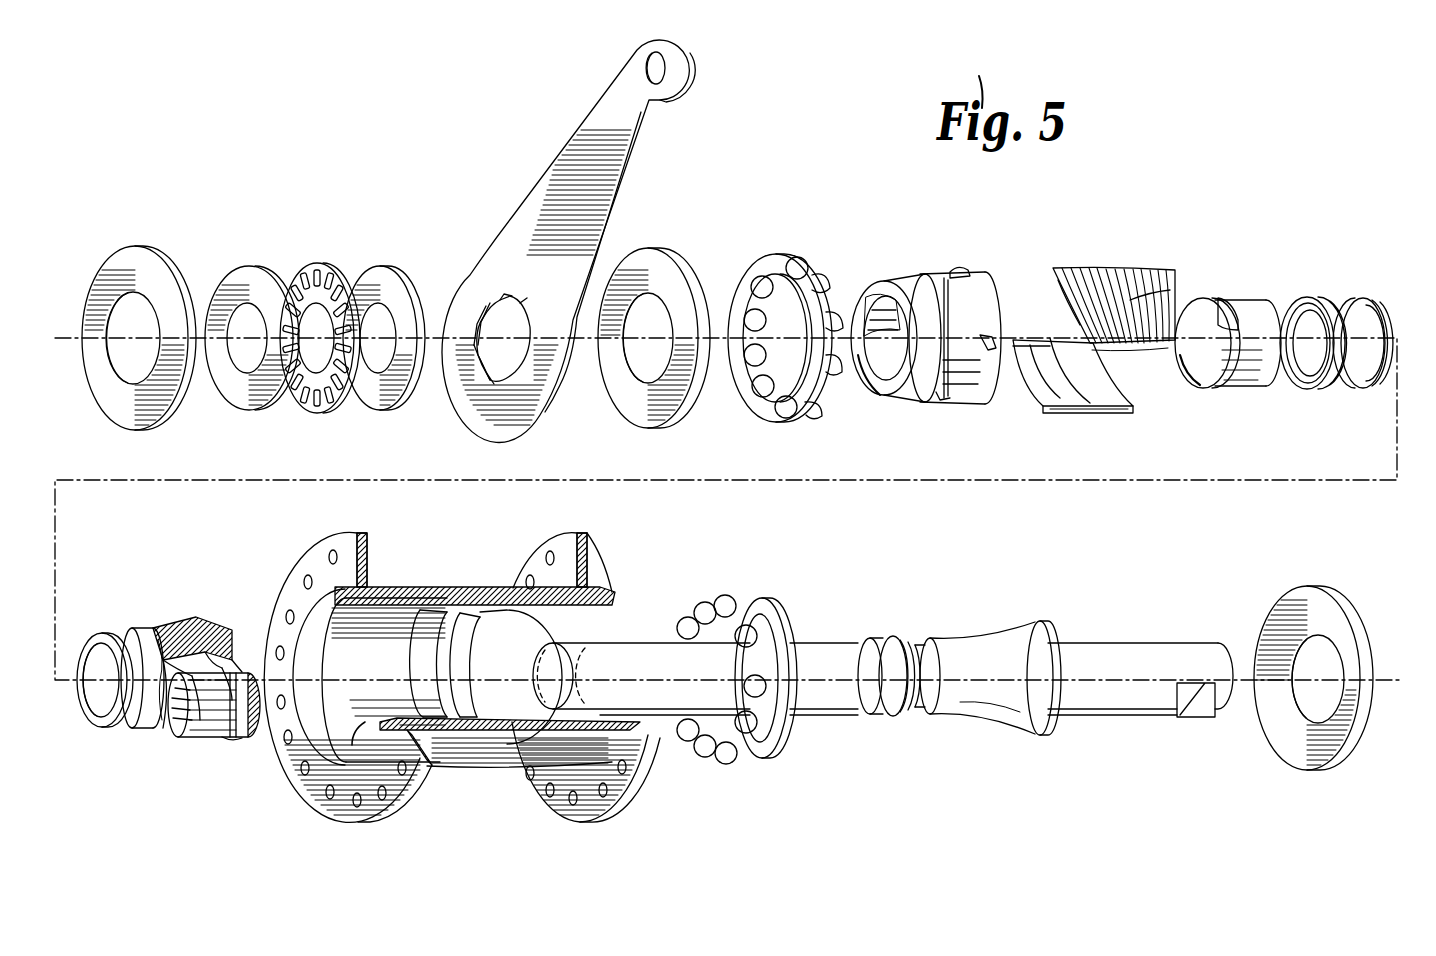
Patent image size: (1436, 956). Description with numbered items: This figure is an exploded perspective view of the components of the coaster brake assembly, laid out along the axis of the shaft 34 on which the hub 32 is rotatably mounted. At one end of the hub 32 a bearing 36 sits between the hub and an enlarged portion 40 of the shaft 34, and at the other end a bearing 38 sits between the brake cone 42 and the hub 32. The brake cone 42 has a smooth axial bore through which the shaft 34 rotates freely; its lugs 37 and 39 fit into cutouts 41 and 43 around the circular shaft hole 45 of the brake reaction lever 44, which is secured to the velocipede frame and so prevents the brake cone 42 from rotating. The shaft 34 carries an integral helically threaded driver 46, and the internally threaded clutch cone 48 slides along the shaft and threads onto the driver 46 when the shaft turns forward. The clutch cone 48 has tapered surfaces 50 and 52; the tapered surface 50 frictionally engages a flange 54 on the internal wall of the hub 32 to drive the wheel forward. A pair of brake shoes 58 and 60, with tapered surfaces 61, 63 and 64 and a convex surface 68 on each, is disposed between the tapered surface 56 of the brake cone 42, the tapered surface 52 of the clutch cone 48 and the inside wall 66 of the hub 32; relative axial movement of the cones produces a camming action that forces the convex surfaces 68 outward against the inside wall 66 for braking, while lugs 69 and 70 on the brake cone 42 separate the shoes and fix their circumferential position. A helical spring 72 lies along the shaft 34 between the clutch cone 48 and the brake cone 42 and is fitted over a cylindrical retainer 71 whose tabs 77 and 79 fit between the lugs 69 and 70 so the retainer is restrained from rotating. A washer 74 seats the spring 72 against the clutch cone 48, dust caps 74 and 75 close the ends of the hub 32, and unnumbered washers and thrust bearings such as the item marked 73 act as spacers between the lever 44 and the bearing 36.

The hub 32 is at (437, 587).
The shaft 34 is at (1131, 695).
The bearing 36 is at (770, 620).
The lug 37 is at (903, 298).
The bearing 38 is at (808, 262).
The lug 39 is at (861, 370).
The enlarged portion 40 is at (976, 622).
The cutout 41 is at (512, 297).
The brake cone 42 is at (940, 400).
The cutout 43 is at (488, 380).
The brake reaction lever 44 is at (630, 110).
The circular shaft hole 45 is at (488, 303).
The driver 46 is at (909, 642).
The clutch cone 48 is at (222, 628).
The tapered surface 50 is at (236, 738).
The tapered surface 52 is at (196, 737).
The flange 54 is at (551, 640).
The tapered surface 56 is at (982, 292).
The brake shoe 58 is at (1124, 280).
The brake shoe 60 is at (1096, 413).
The tapered surface 61 is at (1076, 283).
The tapered surface 63 is at (1043, 413).
The tapered surface 64 is at (1106, 392).
The inside wall 66 is at (352, 745).
The convex surface 68 is at (1132, 300).
The lug 69 is at (961, 272).
The lug 70 is at (990, 350).
The cylindrical retainer 71 is at (1265, 365).
The helical spring 72 is at (1340, 300).
The washer 73 is at (160, 256).
The washer 74 is at (700, 262).
The dust cap 75 is at (1338, 590).
The tab 77 is at (1231, 320).
The tab 79 is at (1197, 385).